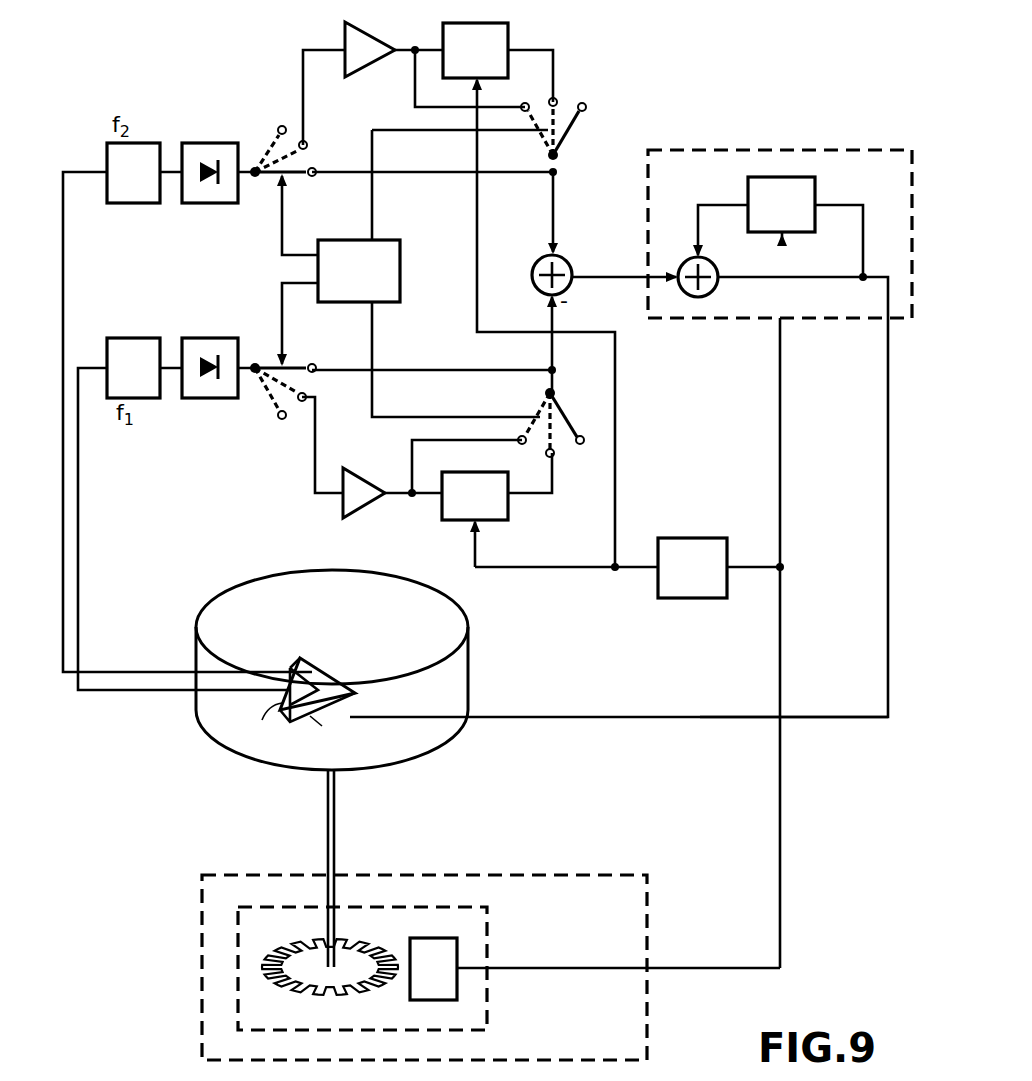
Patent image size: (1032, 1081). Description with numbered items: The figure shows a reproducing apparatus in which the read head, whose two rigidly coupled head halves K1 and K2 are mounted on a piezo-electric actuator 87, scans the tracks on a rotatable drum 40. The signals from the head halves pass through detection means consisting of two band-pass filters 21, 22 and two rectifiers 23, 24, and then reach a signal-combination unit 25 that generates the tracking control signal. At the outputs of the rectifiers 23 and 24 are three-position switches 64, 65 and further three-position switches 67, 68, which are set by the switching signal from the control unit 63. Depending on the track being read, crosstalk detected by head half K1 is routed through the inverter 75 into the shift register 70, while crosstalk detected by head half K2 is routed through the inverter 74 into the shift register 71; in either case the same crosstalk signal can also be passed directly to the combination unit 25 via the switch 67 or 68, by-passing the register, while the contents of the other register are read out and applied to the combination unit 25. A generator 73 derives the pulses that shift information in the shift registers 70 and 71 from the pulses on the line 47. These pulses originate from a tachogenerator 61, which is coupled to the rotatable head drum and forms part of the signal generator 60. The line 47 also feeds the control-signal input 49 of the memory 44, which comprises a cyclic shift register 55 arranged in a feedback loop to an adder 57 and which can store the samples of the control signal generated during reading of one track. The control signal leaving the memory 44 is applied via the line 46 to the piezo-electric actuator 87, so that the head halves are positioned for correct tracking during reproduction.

The band-pass filter 21 is at (130, 205).
The band-pass filter 22 is at (130, 336).
The rectifier 23 is at (215, 142).
The rectifier 24 is at (205, 400).
The signal-combination unit 25 is at (568, 262).
The disc / rotating body 40 is at (250, 578).
The memory 44 is at (702, 150).
The line 46 is at (828, 715).
The line 47 is at (782, 628).
The control-signal input 49 is at (782, 322).
The shift register 55 is at (782, 175).
The adder 57 is at (684, 262).
The signal generator 60 is at (650, 933).
The tachogenerator 61 is at (490, 944).
The control unit 63 is at (400, 272).
The three-position switch 64 is at (298, 178).
The three-position switch 65 is at (268, 360).
The three-position switch 67 is at (570, 136).
The three-position switch 68 is at (566, 410).
The shift register 70 is at (510, 38).
The shift register 71 is at (494, 522).
The generator 73 is at (704, 600).
The inverter 74 is at (372, 510).
The inverter 75 is at (344, 40).
The piezo-electric actuator 87 is at (330, 672).